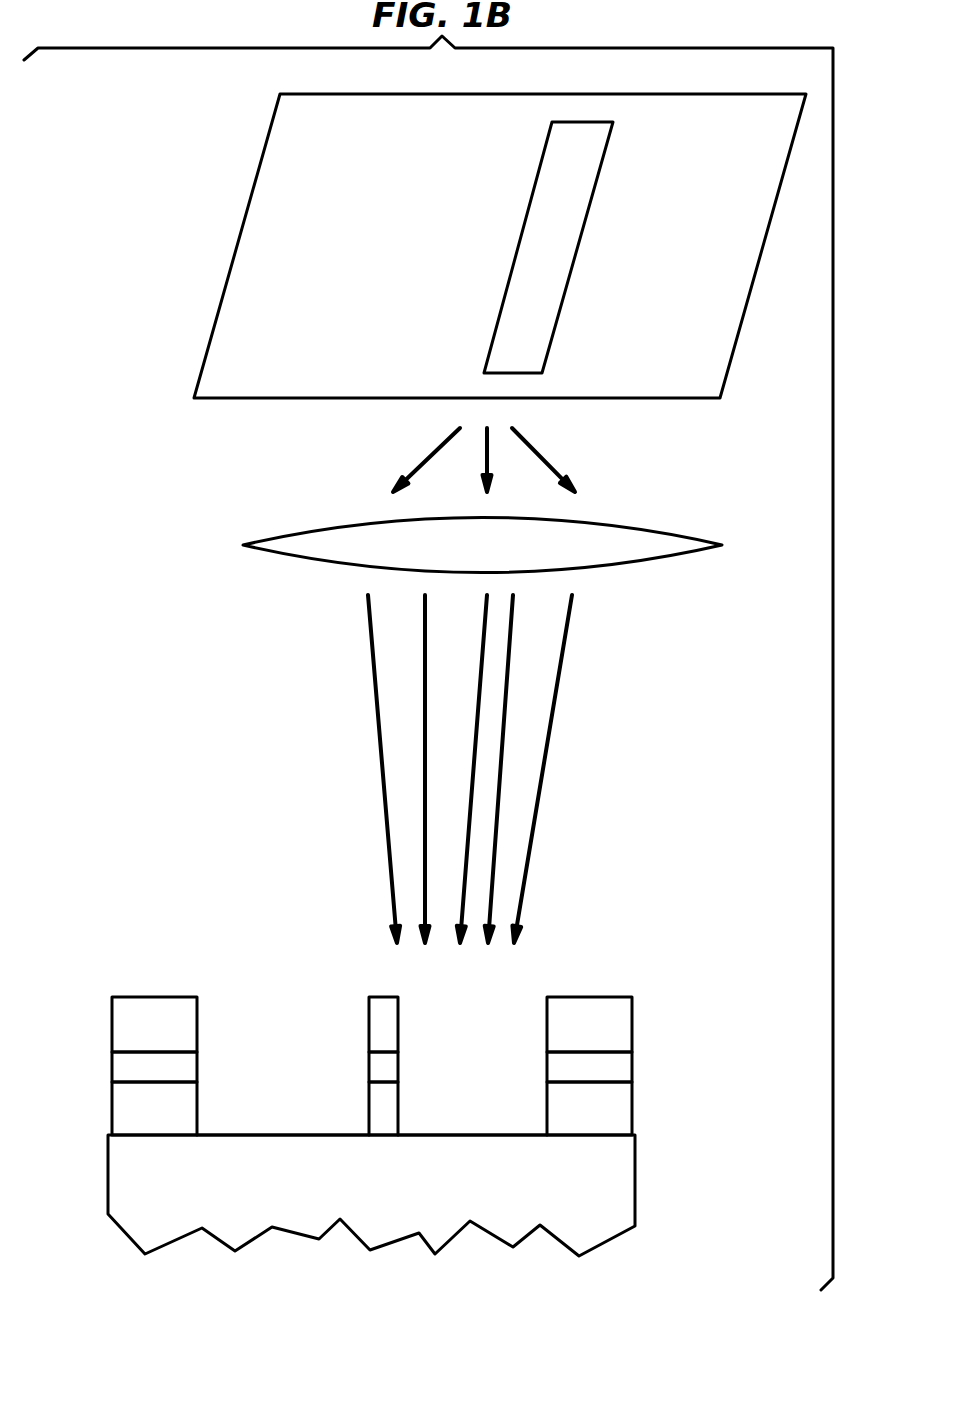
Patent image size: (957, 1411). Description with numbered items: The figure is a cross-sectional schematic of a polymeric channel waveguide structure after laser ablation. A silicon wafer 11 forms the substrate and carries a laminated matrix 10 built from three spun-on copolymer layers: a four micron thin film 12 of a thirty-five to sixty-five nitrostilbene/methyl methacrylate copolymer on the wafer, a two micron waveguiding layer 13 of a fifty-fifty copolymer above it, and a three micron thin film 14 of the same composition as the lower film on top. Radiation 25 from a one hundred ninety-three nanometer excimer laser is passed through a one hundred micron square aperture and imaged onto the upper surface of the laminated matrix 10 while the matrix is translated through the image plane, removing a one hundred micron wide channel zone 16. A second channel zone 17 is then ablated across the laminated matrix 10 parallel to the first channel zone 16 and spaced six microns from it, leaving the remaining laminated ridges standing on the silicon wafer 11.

The laminated matrix 10 is at (394, 1049).
The silicon wafer 11 is at (586, 1226).
The thin film 12 is at (613, 1108).
The waveguiding layer 13 is at (618, 1065).
The thin film 14 is at (620, 1013).
The channel zone 16 is at (529, 972).
The second channel zone 17 is at (282, 969).
The radiation 25 is at (623, 444).